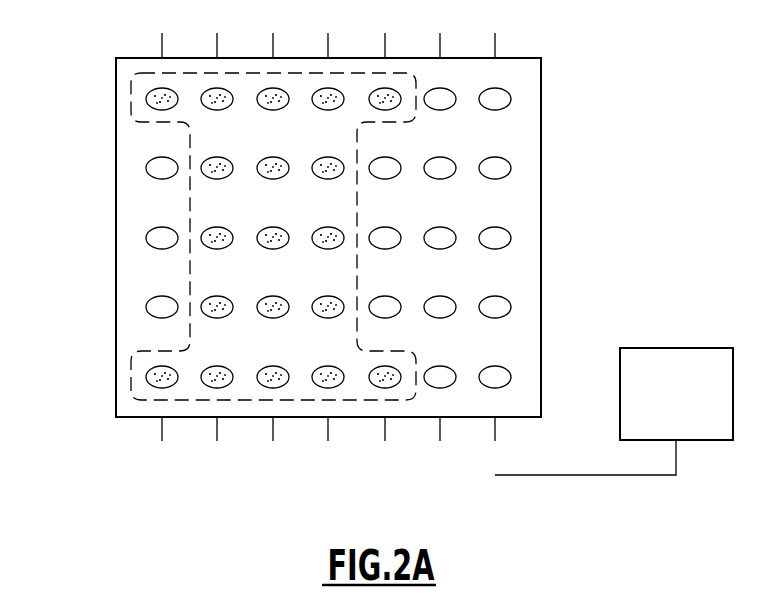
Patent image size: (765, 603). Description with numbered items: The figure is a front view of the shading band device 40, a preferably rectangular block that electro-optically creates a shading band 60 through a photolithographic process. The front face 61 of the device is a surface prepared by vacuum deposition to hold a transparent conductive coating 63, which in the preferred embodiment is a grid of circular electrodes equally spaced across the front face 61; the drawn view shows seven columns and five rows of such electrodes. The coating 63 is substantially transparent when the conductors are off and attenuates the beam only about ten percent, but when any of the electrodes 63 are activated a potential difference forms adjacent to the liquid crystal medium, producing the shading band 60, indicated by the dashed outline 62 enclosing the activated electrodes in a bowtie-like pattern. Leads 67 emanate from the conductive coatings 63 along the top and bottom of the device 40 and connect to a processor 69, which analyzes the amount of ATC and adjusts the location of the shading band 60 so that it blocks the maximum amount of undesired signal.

The shading band device 40 is at (580, 76).
The shading band 60 is at (212, 273).
The front face 61 is at (488, 203).
The selected region outline 62 is at (106, 88).
The transparent conductive coating 63 is at (500, 240).
The leads 67 is at (162, 441).
The processor 69 is at (661, 408).